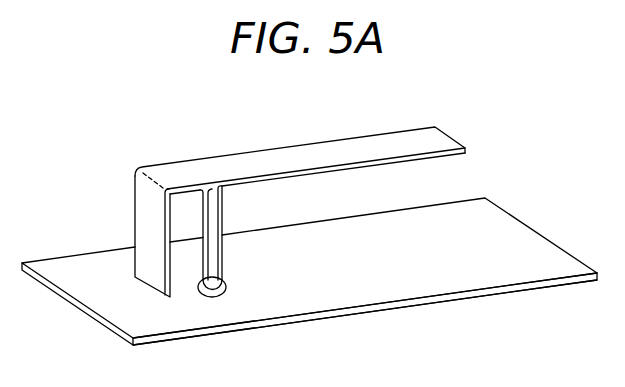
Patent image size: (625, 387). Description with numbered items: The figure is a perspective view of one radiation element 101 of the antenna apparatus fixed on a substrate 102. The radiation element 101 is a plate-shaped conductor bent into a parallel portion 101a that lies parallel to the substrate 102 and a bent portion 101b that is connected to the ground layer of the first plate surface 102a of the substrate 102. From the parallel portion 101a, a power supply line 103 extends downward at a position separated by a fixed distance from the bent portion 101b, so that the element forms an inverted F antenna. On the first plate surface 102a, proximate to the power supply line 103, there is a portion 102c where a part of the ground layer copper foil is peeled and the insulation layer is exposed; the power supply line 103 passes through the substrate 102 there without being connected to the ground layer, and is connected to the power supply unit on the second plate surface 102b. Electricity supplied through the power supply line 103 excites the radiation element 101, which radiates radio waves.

The radiation element 101 is at (265, 222).
The parallel portion 101a is at (341, 153).
The bent portion 101b is at (143, 212).
The substrate 102 is at (309, 273).
The first plate surface 102a is at (500, 283).
The second plate surface 102b is at (415, 306).
The portion 102c is at (227, 283).
The power supply line 103 is at (210, 295).